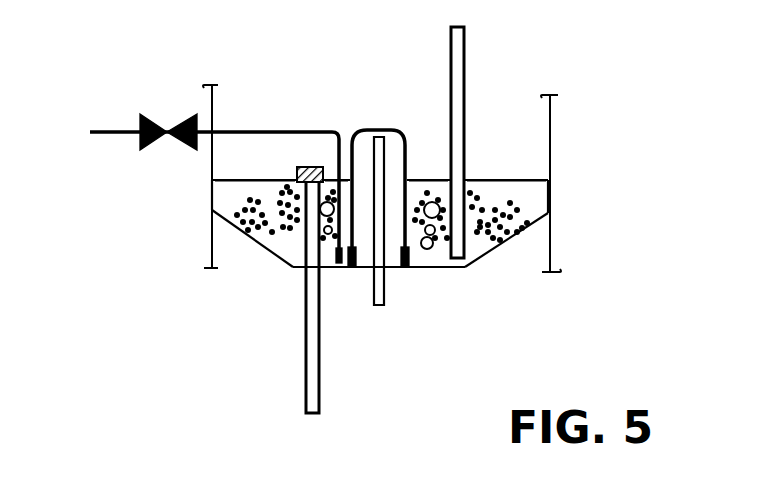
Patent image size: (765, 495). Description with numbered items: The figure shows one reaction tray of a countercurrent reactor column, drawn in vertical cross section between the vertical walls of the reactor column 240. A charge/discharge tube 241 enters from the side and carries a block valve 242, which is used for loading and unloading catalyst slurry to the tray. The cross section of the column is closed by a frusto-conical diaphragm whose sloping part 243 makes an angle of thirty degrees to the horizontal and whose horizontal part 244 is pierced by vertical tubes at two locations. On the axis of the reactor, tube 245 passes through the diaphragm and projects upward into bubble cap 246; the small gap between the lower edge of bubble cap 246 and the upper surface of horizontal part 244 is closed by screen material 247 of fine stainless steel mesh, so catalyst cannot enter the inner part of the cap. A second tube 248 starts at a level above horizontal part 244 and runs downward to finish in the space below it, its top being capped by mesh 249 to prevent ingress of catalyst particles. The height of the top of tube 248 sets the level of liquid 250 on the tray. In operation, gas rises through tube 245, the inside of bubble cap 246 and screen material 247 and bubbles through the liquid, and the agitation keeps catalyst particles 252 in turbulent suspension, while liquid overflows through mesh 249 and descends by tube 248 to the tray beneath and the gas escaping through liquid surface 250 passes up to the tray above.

The vertical walls of the reactor column 240 is at (208, 168).
The charge/discharge tube 241 is at (108, 130).
The block valve 242 is at (165, 128).
The sloping part of the diaphragm 243 is at (266, 250).
The horizontal part of the diaphragm 244 is at (440, 270).
The tube 245 is at (379, 306).
The bubble cap 246 is at (361, 128).
The screen material 247 is at (422, 268).
The tube 248 is at (321, 384).
The mesh 249 is at (324, 167).
The liquid 250 is at (252, 179).
The catalyst particles 252 is at (520, 213).